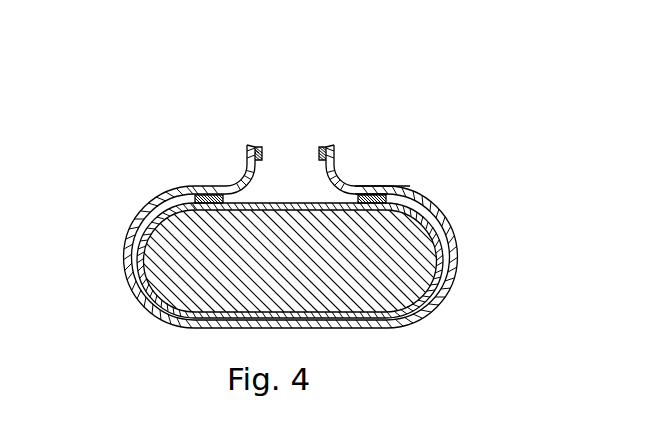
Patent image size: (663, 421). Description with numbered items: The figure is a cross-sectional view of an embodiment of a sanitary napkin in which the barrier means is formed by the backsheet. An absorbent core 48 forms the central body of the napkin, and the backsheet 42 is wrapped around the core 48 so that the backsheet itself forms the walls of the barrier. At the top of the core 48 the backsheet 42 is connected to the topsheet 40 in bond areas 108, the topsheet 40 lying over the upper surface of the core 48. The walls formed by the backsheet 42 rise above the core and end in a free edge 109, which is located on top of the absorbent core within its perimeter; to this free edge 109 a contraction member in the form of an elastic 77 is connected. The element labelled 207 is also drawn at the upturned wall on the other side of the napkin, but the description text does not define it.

The topsheet 40 is at (303, 204).
The backsheet 42 is at (403, 325).
The absorbent core 48 is at (422, 272).
The elastic 77 is at (262, 142).
The bond areas 108 is at (398, 190).
The free edge 109 is at (331, 146).
The sheath edge flap 207 is at (242, 167).